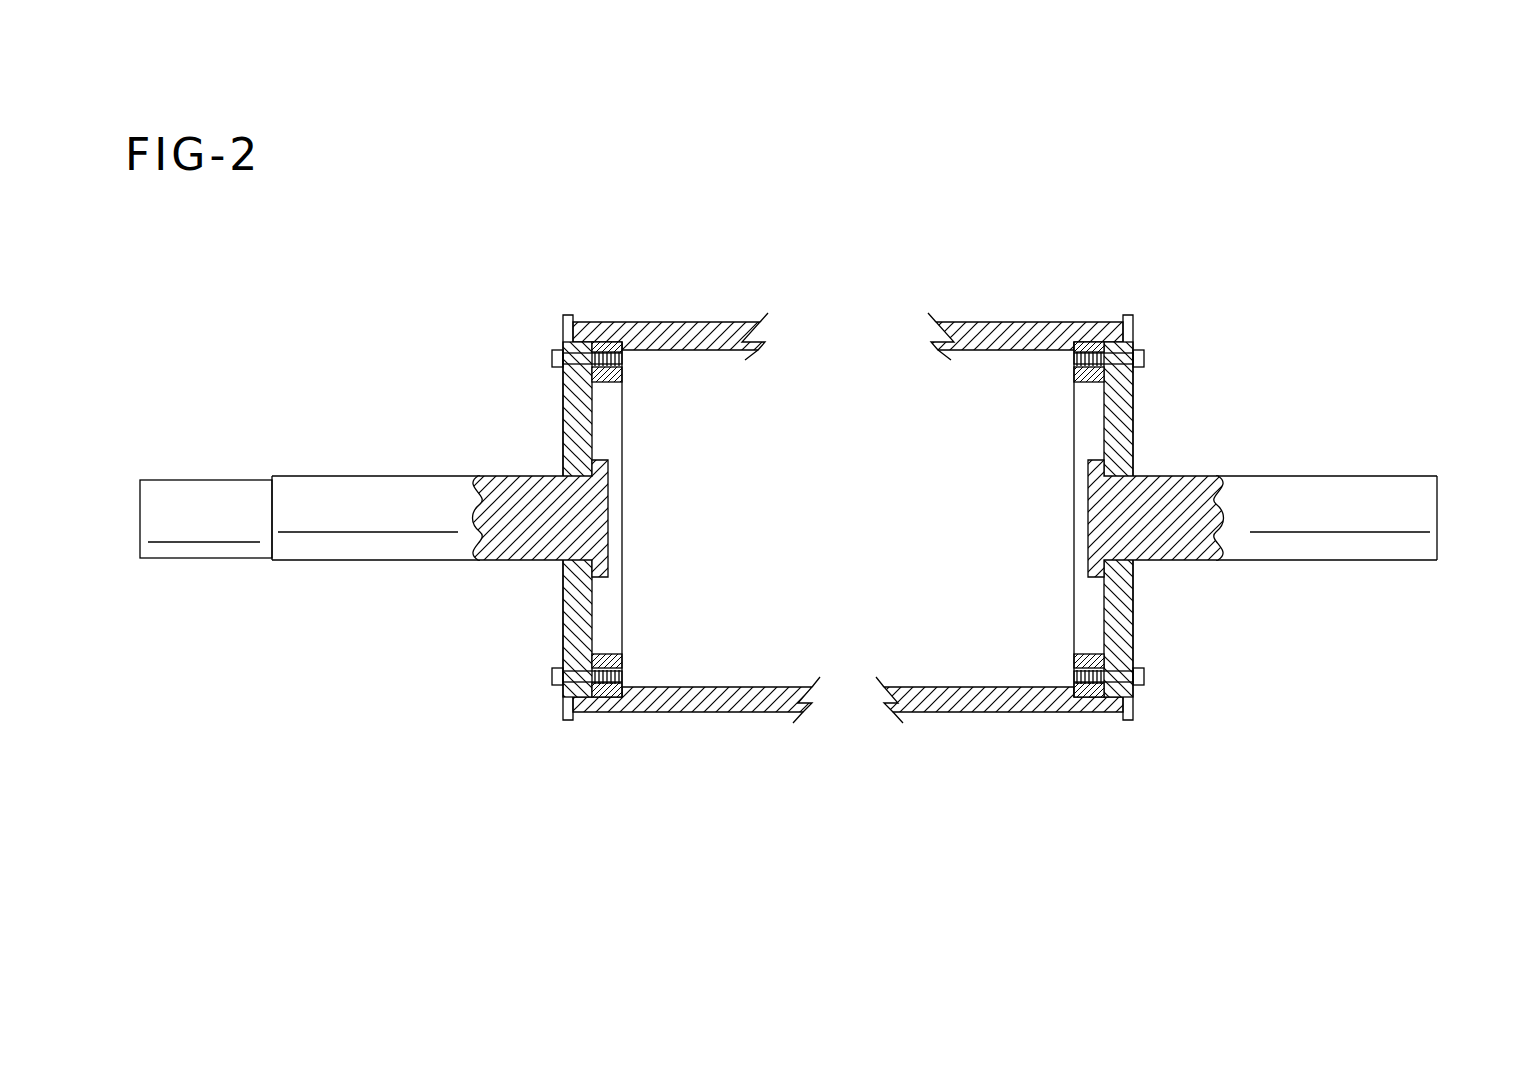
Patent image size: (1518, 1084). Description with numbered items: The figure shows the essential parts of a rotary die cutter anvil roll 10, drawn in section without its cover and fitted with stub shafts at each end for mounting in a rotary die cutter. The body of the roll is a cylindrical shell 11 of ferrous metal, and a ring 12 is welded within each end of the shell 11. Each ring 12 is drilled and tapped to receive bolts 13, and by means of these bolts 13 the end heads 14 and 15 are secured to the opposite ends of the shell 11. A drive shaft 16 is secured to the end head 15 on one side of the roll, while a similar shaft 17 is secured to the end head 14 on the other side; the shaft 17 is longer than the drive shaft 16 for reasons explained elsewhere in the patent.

The rotary die cutter anvil roll 10 is at (820, 454).
The cylindrical shell 11 is at (673, 322).
The ring 12 is at (623, 372).
The bolt 13 is at (553, 352).
The end head 14 is at (570, 390).
The end head 15 is at (1133, 405).
The drive shaft 16 is at (1320, 478).
The shaft 17 is at (430, 545).